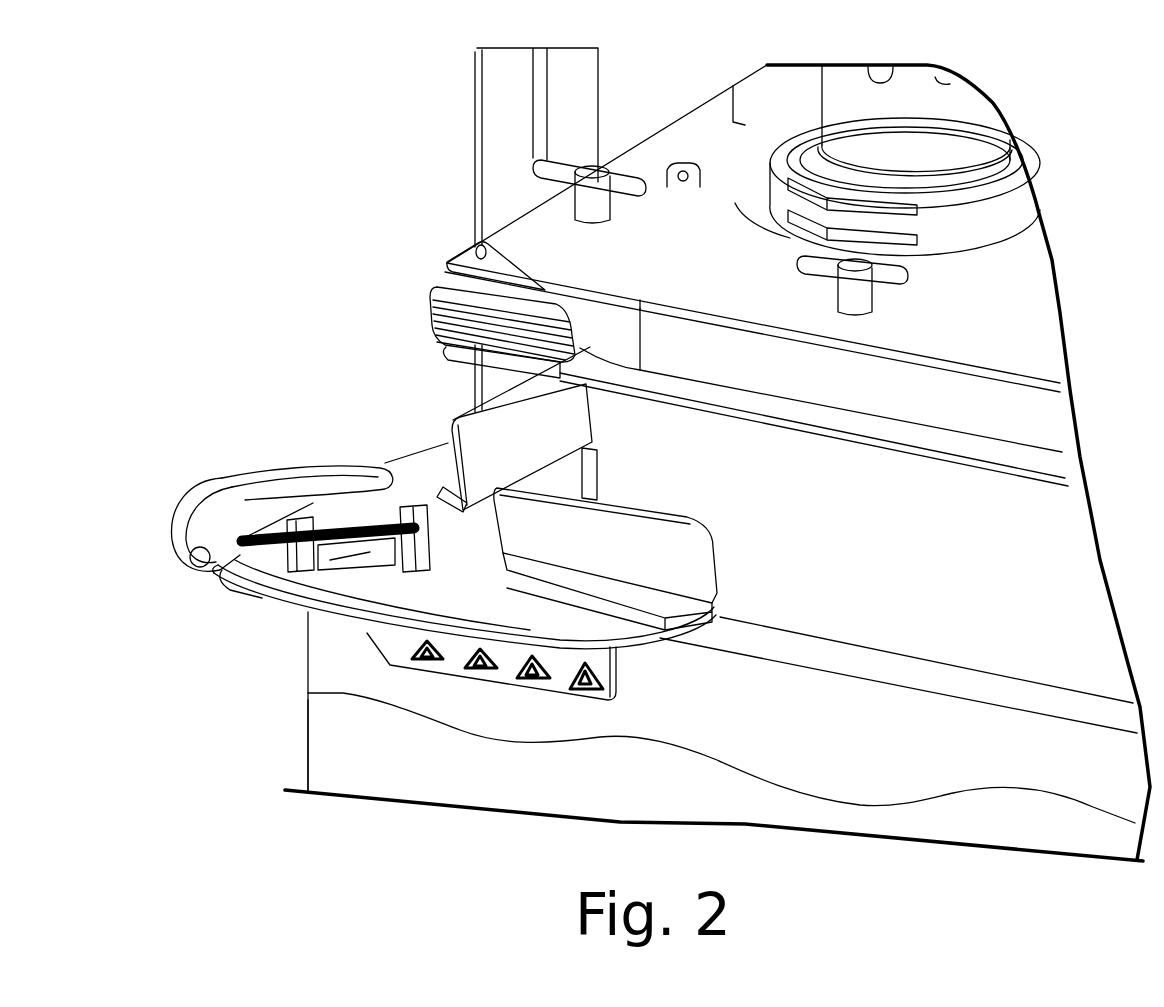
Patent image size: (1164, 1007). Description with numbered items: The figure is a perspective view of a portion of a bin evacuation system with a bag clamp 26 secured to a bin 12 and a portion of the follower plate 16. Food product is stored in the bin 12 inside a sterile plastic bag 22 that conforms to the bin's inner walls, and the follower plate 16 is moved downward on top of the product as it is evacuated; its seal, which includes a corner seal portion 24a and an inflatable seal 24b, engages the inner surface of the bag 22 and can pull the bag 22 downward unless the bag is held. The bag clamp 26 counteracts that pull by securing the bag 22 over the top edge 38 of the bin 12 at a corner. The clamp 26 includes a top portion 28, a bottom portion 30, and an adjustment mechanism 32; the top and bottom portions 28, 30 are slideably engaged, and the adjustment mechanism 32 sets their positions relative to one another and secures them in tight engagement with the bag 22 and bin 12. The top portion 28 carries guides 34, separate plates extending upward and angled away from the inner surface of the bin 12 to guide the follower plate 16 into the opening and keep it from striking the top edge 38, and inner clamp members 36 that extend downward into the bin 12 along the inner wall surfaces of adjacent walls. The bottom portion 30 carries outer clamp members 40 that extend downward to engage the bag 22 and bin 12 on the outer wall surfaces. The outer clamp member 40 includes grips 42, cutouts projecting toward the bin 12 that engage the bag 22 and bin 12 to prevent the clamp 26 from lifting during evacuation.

The bin 12 is at (652, 786).
The follower plate 16 is at (853, 443).
The sterile plastic bag 22 is at (887, 744).
The corner seal portion 24a is at (430, 312).
The inflatable seal 24b is at (768, 365).
The bag clamp 26 is at (300, 432).
The top portion 28 is at (466, 607).
The bottom portion 30 is at (257, 605).
The adjustment mechanism 32 is at (222, 478).
The guides 34 is at (532, 434).
The inner clamp members 36 is at (587, 482).
The top edge 38 is at (971, 682).
The outer clamp members 40 is at (603, 660).
The grips 42 is at (587, 676).